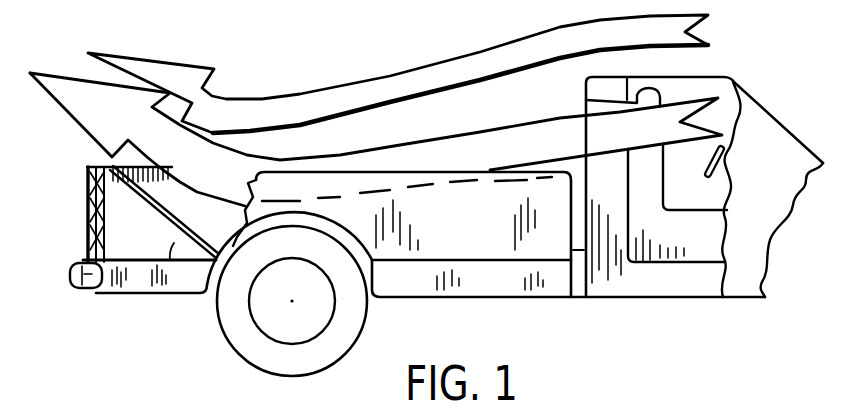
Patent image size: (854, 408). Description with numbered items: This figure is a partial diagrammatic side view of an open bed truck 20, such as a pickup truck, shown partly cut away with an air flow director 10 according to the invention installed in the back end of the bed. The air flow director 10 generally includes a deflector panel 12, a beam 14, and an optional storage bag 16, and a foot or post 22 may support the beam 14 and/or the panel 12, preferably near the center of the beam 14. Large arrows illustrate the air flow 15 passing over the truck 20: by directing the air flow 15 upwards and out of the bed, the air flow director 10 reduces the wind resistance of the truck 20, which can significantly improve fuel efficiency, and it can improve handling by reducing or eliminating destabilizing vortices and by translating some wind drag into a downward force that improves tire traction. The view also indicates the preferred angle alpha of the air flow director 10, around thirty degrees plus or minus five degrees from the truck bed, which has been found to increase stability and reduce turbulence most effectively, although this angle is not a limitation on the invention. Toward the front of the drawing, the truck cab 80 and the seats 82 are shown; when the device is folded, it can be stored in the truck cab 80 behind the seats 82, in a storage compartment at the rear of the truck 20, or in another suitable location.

The air flow director 10 is at (126, 216).
The deflector panel 12 is at (97, 228).
The beam 14 is at (88, 193).
The air flow 15 is at (442, 158).
The storage bag 16 is at (148, 245).
The open bed truck 20 is at (779, 111).
The post 22 is at (93, 246).
The truck cab 80 is at (722, 184).
The seats 82 is at (586, 100).